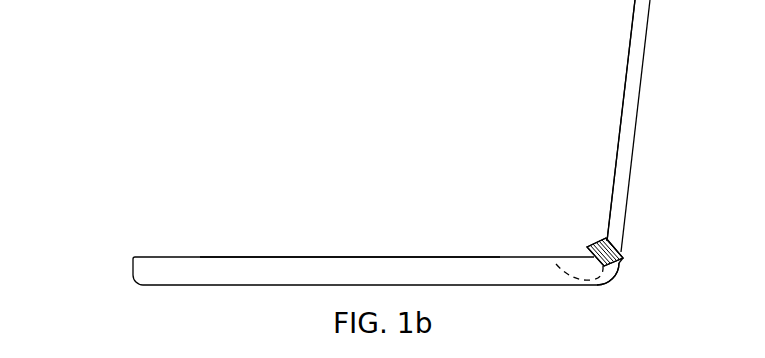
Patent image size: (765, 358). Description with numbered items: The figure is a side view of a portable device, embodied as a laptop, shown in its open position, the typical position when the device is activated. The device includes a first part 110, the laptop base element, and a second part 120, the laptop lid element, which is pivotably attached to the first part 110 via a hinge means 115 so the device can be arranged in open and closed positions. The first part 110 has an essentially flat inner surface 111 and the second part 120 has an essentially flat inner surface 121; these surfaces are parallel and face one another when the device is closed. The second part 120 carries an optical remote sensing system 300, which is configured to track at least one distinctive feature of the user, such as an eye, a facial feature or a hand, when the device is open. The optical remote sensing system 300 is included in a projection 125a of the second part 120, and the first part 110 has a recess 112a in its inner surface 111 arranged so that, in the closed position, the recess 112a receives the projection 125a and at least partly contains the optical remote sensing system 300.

The first part 110 is at (133, 270).
The essentially flat inner surface 111 is at (368, 257).
The recess 112a is at (590, 279).
The hinge means 115 is at (622, 268).
The second part 120 is at (636, 127).
The essentially flat inner surface 121 is at (622, 108).
The projection 125a is at (588, 250).
The optical remote sensing system 300 is at (622, 249).